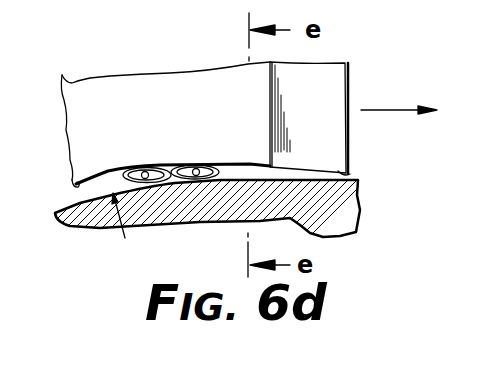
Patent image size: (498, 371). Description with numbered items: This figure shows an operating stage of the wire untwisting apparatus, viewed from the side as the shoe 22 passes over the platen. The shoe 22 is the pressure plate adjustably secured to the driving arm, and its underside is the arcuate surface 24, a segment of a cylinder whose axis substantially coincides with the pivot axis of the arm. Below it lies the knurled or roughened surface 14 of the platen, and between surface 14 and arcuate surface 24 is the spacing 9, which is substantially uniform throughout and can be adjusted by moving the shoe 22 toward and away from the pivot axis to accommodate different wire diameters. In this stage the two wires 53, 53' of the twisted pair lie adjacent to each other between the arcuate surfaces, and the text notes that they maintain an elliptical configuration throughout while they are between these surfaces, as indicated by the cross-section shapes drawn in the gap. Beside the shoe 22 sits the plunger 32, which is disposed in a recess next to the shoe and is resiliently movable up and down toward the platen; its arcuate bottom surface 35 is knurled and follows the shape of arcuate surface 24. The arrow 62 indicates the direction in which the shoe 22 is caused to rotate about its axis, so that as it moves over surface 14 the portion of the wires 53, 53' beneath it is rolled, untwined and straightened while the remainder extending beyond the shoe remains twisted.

The spacing 9 is at (108, 172).
The surface of platen 14 is at (75, 204).
The shoe 22 is at (196, 129).
The arcuate surface 24 is at (72, 184).
The plunger 32 is at (343, 81).
The arcuate bottom surface 35 is at (349, 174).
The wire 53 is at (147, 158).
The wire 53' is at (212, 156).
The arrow 62 is at (396, 109).